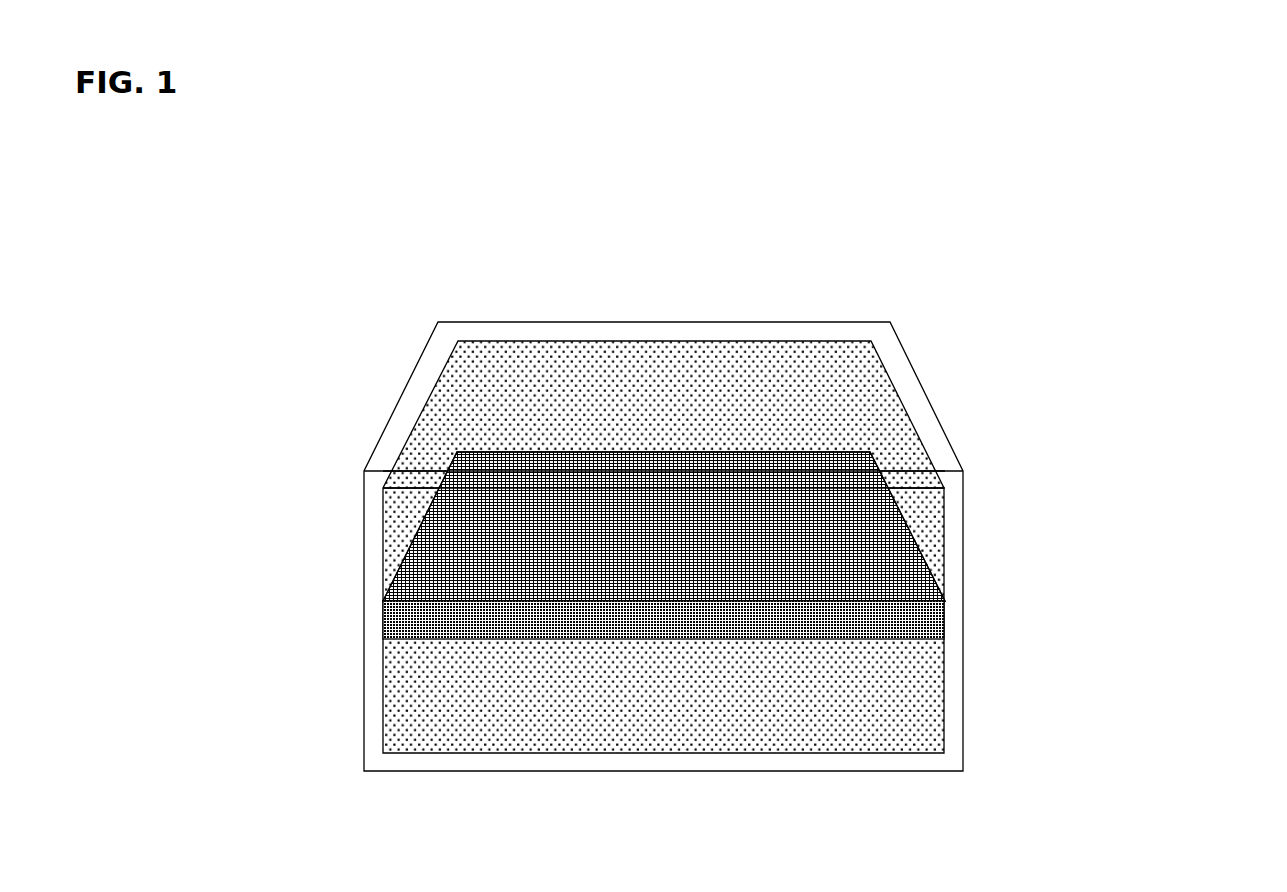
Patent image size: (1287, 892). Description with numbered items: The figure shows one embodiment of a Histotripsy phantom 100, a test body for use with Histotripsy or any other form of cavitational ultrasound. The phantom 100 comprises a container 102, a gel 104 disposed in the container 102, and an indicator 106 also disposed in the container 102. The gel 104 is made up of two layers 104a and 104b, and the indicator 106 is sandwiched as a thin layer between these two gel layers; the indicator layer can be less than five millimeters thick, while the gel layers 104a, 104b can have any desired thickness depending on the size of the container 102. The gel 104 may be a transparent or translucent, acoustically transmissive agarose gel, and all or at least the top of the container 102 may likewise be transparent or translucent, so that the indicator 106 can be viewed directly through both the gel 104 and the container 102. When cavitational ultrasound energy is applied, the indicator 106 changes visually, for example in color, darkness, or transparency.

The Histotripsy phantom 100 is at (1163, 232).
The container 102 is at (918, 380).
The gel 104 is at (430, 397).
The gel layer 104a is at (918, 545).
The gel layer 104b is at (907, 697).
The indicator 106 is at (385, 637).